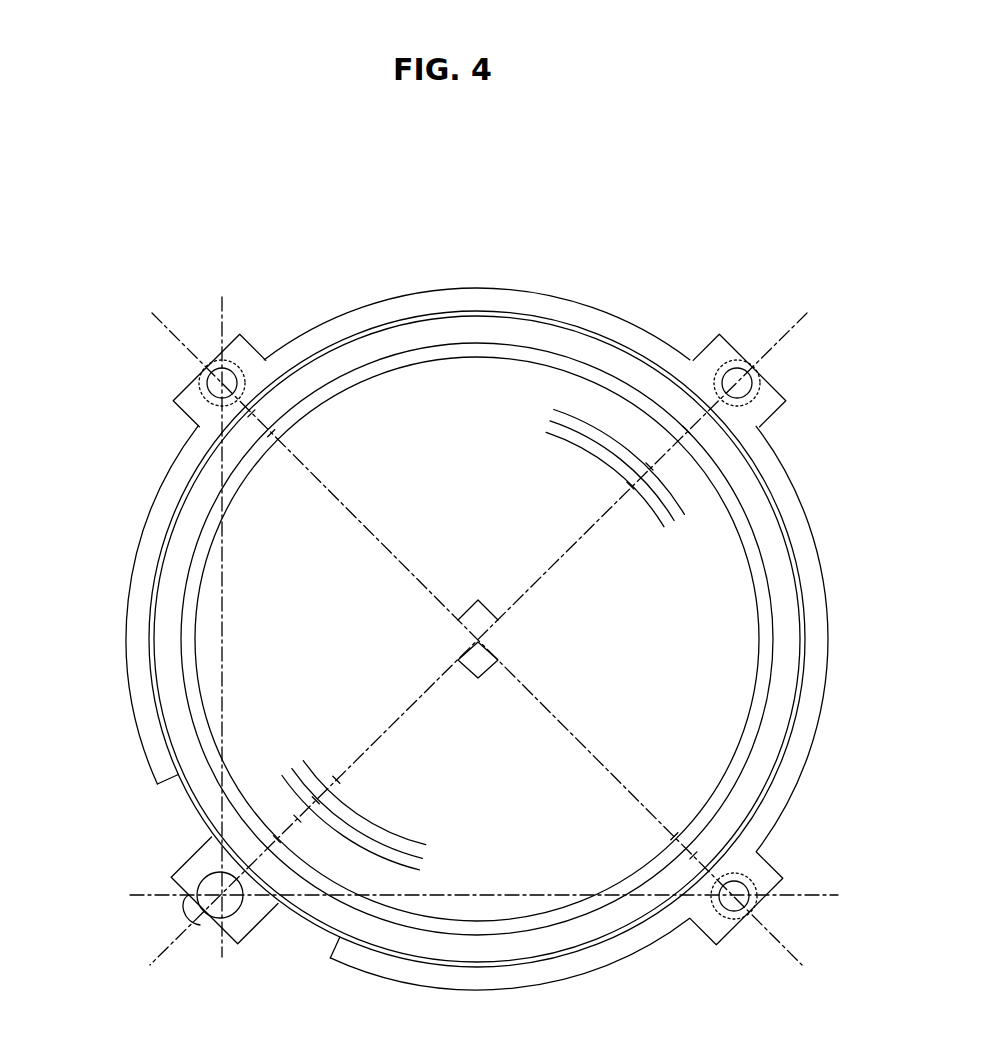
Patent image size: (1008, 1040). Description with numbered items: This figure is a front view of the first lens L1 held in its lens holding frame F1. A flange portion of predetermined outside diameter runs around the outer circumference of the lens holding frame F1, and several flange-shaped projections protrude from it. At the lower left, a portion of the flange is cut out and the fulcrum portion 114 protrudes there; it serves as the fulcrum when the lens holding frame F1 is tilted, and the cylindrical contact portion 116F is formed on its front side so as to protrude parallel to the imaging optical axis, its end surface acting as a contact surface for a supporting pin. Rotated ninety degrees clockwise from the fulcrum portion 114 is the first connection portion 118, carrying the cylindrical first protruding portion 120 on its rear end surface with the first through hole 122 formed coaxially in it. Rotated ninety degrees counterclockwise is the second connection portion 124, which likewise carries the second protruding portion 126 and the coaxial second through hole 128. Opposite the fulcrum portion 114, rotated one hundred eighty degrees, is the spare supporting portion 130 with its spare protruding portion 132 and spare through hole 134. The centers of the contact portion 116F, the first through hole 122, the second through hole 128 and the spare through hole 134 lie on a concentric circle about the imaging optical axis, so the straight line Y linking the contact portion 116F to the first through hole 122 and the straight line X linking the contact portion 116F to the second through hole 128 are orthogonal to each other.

The fulcrum portion 114 is at (257, 930).
The contact portion 116F is at (212, 923).
The first connection portion 118 is at (180, 421).
The first protruding portion 120 is at (200, 372).
The first through hole 122 is at (236, 362).
The second connection portion 124 is at (697, 932).
The second protruding portion 126 is at (757, 882).
The second through hole 128 is at (734, 912).
The spare supporting portion 130 is at (780, 396).
The spare protruding portion 132 is at (737, 360).
The spare through hole 134 is at (740, 368).
The first lens L1 is at (207, 633).
The lens holding frame F1 is at (784, 628).
The straight line X is at (498, 894).
The straight line Y is at (221, 611).